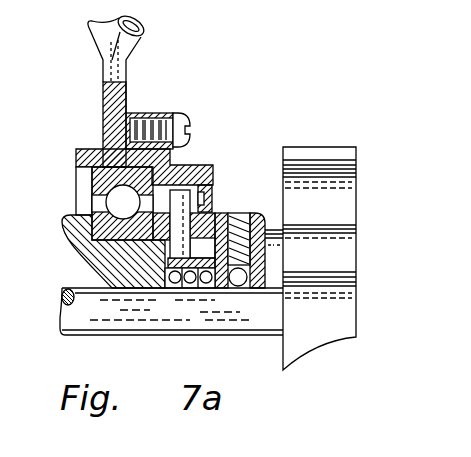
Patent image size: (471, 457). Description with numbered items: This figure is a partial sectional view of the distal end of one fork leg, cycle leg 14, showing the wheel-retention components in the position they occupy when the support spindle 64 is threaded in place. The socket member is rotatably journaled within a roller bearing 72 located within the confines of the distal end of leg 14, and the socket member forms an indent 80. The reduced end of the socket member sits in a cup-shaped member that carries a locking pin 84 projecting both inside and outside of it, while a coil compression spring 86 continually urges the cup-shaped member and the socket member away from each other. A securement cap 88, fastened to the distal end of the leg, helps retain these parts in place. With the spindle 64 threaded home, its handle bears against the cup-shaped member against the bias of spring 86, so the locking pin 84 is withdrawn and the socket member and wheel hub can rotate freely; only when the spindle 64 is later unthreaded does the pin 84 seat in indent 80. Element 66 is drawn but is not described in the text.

The cycle leg 14 is at (121, 44).
The securement cap 88 is at (198, 150).
The indent 80 is at (200, 193).
The locking pin 84 is at (176, 203).
The roller bearing 72 is at (97, 237).
The coil compression spring 86 is at (185, 283).
The spindle 64 is at (115, 327).
The roller 66 is at (347, 157).